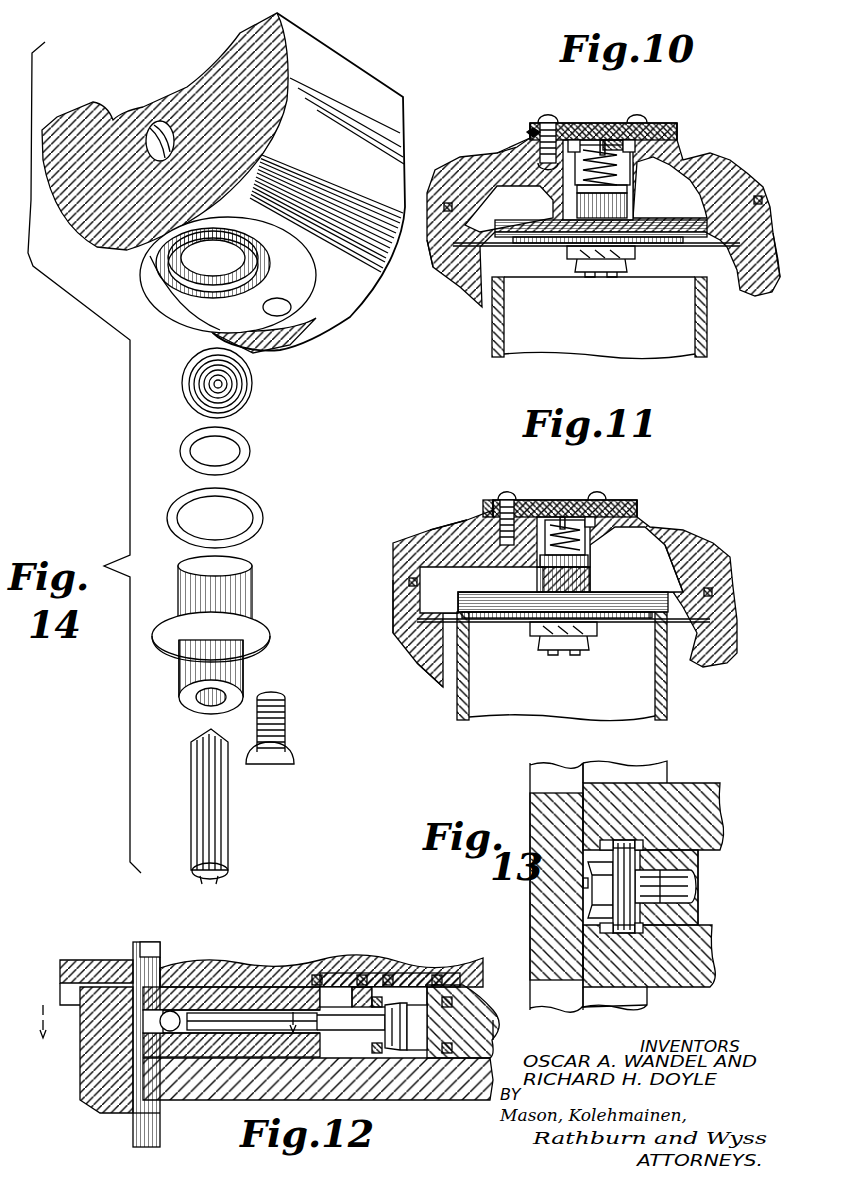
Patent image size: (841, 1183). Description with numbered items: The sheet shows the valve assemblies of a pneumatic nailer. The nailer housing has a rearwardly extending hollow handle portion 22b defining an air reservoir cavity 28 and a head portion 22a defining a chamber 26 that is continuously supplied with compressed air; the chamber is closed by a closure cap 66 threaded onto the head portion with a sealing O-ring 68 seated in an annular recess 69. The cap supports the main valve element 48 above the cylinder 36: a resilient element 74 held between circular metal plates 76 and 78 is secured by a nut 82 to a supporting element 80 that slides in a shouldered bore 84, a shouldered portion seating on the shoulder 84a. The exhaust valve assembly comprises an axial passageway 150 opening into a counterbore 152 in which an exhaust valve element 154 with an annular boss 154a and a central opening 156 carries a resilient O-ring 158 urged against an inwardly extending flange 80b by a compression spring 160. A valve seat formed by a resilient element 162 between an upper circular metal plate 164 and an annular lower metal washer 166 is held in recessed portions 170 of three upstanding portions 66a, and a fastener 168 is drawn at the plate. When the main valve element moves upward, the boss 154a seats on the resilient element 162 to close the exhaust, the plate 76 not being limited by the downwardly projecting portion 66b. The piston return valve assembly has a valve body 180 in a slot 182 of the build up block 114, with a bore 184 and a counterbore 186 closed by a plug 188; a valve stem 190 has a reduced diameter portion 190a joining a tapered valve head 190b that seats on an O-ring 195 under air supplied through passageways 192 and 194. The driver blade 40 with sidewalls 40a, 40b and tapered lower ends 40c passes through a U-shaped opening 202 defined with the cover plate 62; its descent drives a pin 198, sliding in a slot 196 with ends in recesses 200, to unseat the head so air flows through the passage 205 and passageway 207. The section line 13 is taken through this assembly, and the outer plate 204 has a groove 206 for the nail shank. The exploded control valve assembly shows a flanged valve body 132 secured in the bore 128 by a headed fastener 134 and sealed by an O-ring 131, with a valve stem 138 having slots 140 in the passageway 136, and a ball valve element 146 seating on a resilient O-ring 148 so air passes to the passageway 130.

In FIG. 14, the air reservoir cavity 28 is at (179, 181).
In FIG. 14, the hollow handle portion 22b is at (320, 53).
In FIG. 14, the passageway 130 is at (158, 124).
In FIG. 14, the bore 128 is at (204, 275).
In FIG. 14, the ball valve element 146 is at (252, 381).
In FIG. 14, the resilient O-ring 148 is at (241, 447).
In FIG. 14, the O-ring 131 is at (253, 507).
In FIG. 14, the flanged valve body 132 is at (247, 585).
In FIG. 14, the passageway 136 is at (198, 706).
In FIG. 14, the headed fastener 134 is at (293, 766).
In FIG. 14, the axially extending slots 140 is at (192, 775).
In FIG. 14, the valve stem 138 is at (204, 877).
In FIG. 10, the closure cap 66 is at (745, 178).
In FIG. 11, the closure cap 66 is at (712, 555).
In FIG. 10, the upstanding portions 66a is at (525, 136).
In FIG. 11, the upstanding portions 66a is at (422, 533).
In FIG. 10, the downwardly projecting portion 66b is at (641, 211).
In FIG. 11, the downwardly projecting portion 66b is at (600, 586).
In FIG. 10, the shouldered bore 84 is at (654, 186).
In FIG. 11, the shouldered bore 84 is at (520, 548).
In FIG. 10, the shoulder 84a is at (540, 196).
In FIG. 11, the shoulder 84a is at (652, 532).
In FIG. 10, the supporting element 80 is at (573, 158).
In FIG. 11, the supporting element 80 is at (590, 541).
In FIG. 10, the inwardly extending flange 80b is at (578, 122).
In FIG. 10, the counterbore 152 is at (623, 150).
In FIG. 10, the compression spring 160 is at (577, 180).
In FIG. 11, the compression spring 160 is at (537, 580).
In FIG. 10, the axially extending passageway 150 is at (575, 205).
In FIG. 11, the axially extending passageway 150 is at (590, 560).
In FIG. 10, the resilient O-ring 158 is at (646, 136).
In FIG. 11, the resilient O-ring 158 is at (540, 499).
In FIG. 10, the bolt 168 is at (545, 117).
In FIG. 11, the bolt 168 is at (502, 497).
In FIG. 10, the upper circular metal plate 164 is at (672, 122).
In FIG. 11, the upper circular metal plate 164 is at (612, 498).
In FIG. 10, the annular lower metal washer 166 is at (527, 132).
In FIG. 11, the annular lower metal washer 166 is at (640, 522).
In FIG. 10, the resilient element 162 is at (535, 131).
In FIG. 11, the resilient element 162 is at (512, 497).
In FIG. 10, the exhaust valve element 154 is at (585, 135).
In FIG. 10, the annular boss 154a is at (630, 128).
In FIG. 11, the annular boss 154a is at (592, 514).
In FIG. 10, the opening 156 is at (615, 130).
In FIG. 11, the opening 156 is at (565, 515).
In FIG. 11, the recessed portions 170 is at (485, 505).
In FIG. 10, the sealing O-ring 68 is at (444, 208).
In FIG. 11, the sealing O-ring 68 is at (409, 585).
In FIG. 10, the annular recess 69 is at (455, 240).
In FIG. 11, the annular recess 69 is at (715, 596).
In FIG. 10, the head portion 22a is at (460, 292).
In FIG. 11, the head portion 22a is at (395, 622).
In FIG. 12, the head portion 22a is at (222, 963).
In FIG. 10, the chamber 26 is at (742, 296).
In FIG. 11, the chamber 26 is at (440, 674).
In FIG. 10, the circular metal plate 76 is at (672, 221).
In FIG. 11, the circular metal plate 76 is at (640, 595).
In FIG. 10, the circular metal plate 78 is at (546, 248).
In FIG. 11, the circular metal plate 78 is at (630, 623).
In FIG. 11, the resilient element 74 is at (497, 620).
In FIG. 10, the nut 82 is at (628, 267).
In FIG. 11, the nut 82 is at (591, 646).
In FIG. 10, the main valve element 48 is at (582, 288).
In FIG. 11, the main valve element 48 is at (545, 653).
In FIG. 10, the cylinder 36 is at (708, 340).
In FIG. 11, the cylinder 36 is at (457, 704).
In FIG. 13, the outer plate 204 is at (538, 800).
In FIG. 12, the outer plate 204 is at (88, 1062).
In FIG. 13, the build up block 114 is at (712, 805).
In FIG. 12, the build up block 114 is at (480, 1040).
In FIG. 13, the valve body 180 is at (660, 848).
In FIG. 12, the valve body 180 is at (282, 985).
In FIG. 13, the slot 182 is at (700, 856).
In FIG. 13, the bore 184 is at (690, 888).
In FIG. 12, the bore 184 is at (330, 1035).
In FIG. 13, the valve stem 190 is at (698, 882).
In FIG. 12, the valve stem 190 is at (252, 990).
In FIG. 13, the slot 196 is at (590, 865).
In FIG. 12, the slot 196 is at (166, 956).
In FIG. 13, the groove 206 is at (583, 884).
In FIG. 13, the driver blade 40 is at (600, 899).
In FIG. 12, the driver blade 40 is at (133, 946).
In FIG. 13, the sidewall 40a is at (622, 936).
In FIG. 13, the sidewall 40b is at (616, 840).
In FIG. 12, the sidewall 40b is at (156, 942).
In FIG. 12, the tapered lower ends 40c is at (152, 1118).
In FIG. 13, the U-shaped opening 202 is at (604, 838).
In FIG. 13, the recesses 200 is at (640, 838).
In FIG. 13, the pin 198 is at (607, 935).
In FIG. 12, the pin 198 is at (160, 1046).
In FIG. 13, the cover plate 62 is at (612, 996).
In FIG. 12, the cover plate 62 is at (250, 1100).
In FIG. 12, the section line 13 is at (151, 1023).
In FIG. 12, the passageway 207 is at (320, 974).
In FIG. 12, the reduced diameter portion 190a is at (350, 975).
In FIG. 12, the tapered valve head 190b is at (437, 975).
In FIG. 12, the passage 205 is at (382, 995).
In FIG. 12, the passageway 192 is at (403, 1002).
In FIG. 12, the passageway 194 is at (447, 985).
In FIG. 12, the plug 188 is at (462, 1010).
In FIG. 12, the counterbore 186 is at (445, 1058).
In FIG. 12, the O-ring 195 is at (374, 1055).